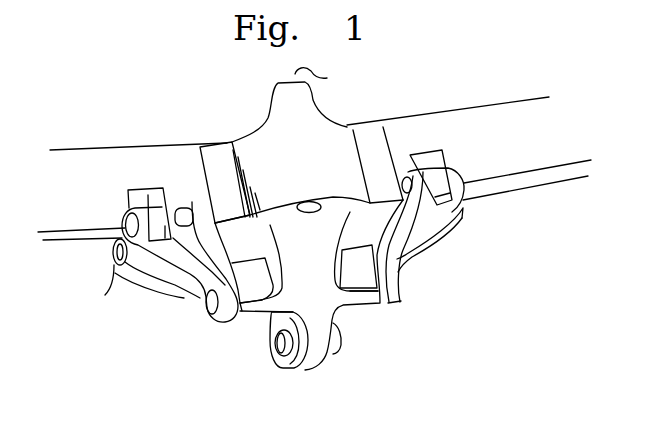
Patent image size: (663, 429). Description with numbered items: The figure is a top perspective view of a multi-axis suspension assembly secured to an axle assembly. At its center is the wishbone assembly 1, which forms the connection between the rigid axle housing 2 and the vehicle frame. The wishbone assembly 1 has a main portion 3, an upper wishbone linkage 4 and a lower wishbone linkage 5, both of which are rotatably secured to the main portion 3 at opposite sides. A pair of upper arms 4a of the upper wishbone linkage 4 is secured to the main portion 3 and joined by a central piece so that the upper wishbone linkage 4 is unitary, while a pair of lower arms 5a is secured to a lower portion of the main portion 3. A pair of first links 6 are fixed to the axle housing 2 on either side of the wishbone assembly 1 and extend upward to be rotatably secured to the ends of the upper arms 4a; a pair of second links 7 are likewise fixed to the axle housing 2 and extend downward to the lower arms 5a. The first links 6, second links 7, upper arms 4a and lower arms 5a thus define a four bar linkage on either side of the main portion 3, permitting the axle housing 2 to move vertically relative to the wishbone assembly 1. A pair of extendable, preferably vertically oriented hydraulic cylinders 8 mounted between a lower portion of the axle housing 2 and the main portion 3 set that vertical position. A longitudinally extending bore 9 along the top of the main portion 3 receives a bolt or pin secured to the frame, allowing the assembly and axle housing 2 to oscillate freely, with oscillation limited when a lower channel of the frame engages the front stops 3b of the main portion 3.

The wishbone assembly 1 is at (362, 313).
The rigid axle housing 2 is at (82, 237).
The main portion 3 is at (312, 283).
The front stops 3b is at (220, 167).
The upper wishbone linkage 4 is at (230, 315).
The upper arms 4a is at (188, 286).
The lower wishbone linkage 5 is at (295, 360).
The lower arms 5a is at (155, 288).
The first links 6 is at (154, 198).
The second links 7 is at (121, 268).
The hydraulic cylinders 8 is at (183, 212).
The longitudinally extending bore 9 is at (332, 207).